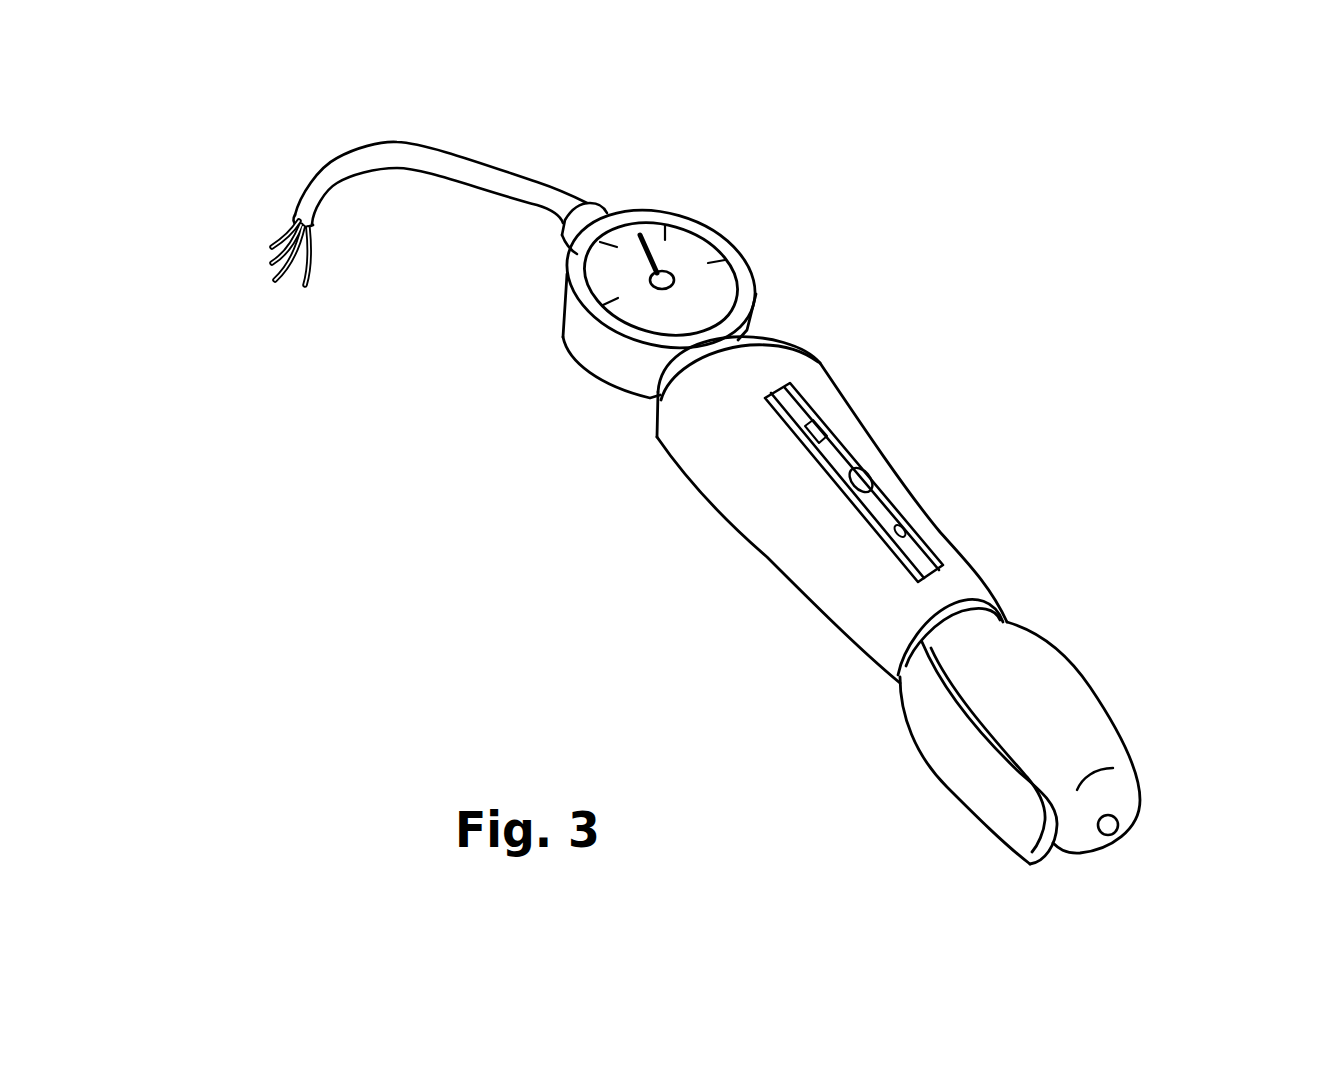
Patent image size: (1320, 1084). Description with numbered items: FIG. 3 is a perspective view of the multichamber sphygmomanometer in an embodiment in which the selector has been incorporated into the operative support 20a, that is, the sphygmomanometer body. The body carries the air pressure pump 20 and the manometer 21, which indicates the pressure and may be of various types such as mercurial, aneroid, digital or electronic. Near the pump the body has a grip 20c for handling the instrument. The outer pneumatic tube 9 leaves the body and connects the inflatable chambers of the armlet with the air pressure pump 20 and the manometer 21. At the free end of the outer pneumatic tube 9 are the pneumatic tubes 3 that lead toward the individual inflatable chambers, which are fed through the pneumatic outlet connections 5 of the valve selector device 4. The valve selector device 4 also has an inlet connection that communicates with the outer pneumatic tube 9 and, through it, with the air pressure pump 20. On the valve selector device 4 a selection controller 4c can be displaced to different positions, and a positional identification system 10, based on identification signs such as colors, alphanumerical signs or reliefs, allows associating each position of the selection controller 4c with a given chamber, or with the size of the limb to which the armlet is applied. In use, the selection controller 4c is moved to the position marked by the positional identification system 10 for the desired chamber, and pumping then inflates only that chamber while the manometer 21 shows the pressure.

The pneumatic tubes 3 is at (250, 270).
The valve selector device 4 is at (937, 530).
The selection controller 4c is at (858, 475).
The pneumatic outlet connections 5 is at (563, 233).
The outer pneumatic tube 9 is at (500, 167).
The positional identification system 10 is at (810, 418).
The air pressure pump 20 is at (1062, 703).
The operative support 20a is at (760, 502).
The grip 20c is at (972, 773).
The manometer 21 is at (720, 237).